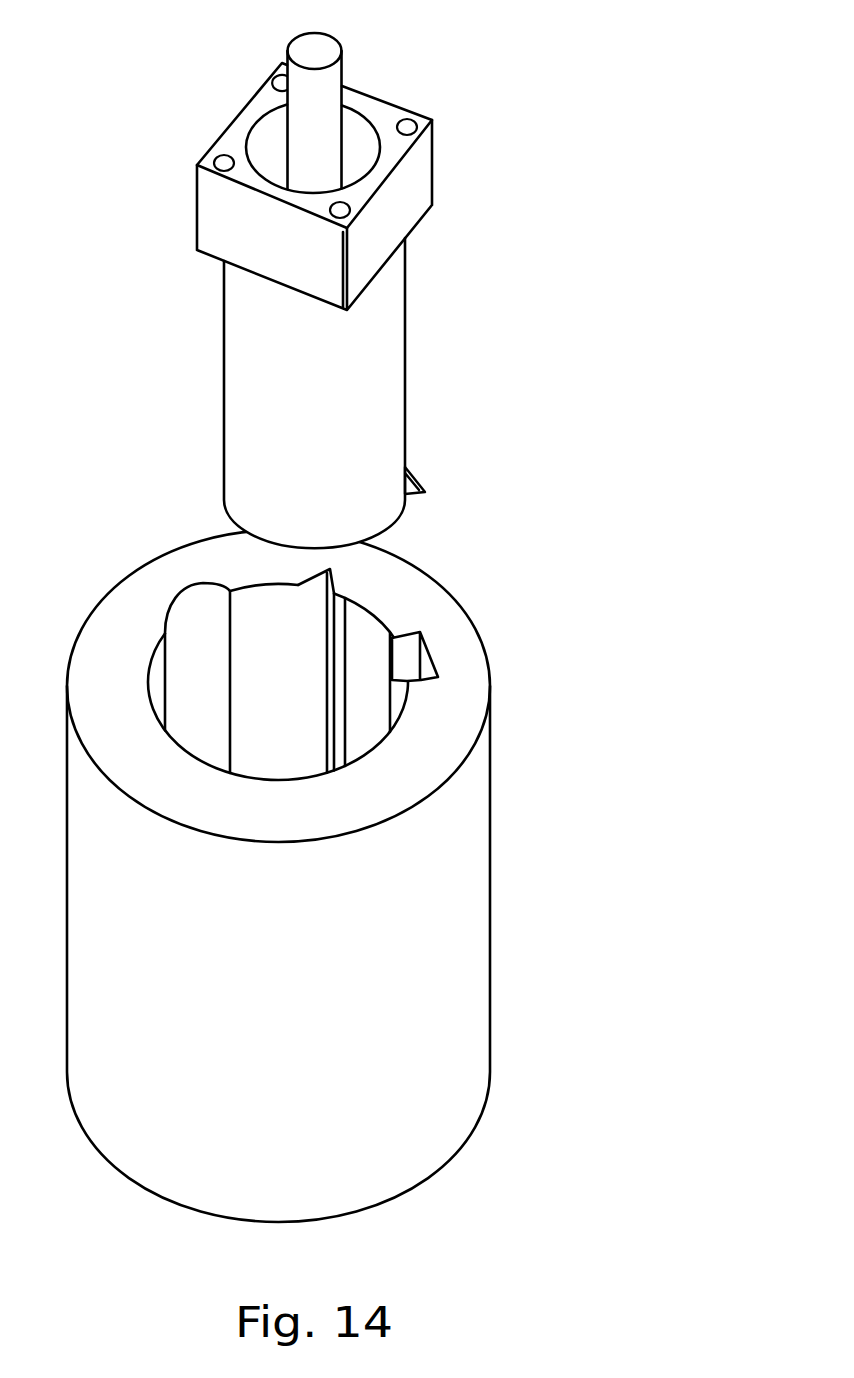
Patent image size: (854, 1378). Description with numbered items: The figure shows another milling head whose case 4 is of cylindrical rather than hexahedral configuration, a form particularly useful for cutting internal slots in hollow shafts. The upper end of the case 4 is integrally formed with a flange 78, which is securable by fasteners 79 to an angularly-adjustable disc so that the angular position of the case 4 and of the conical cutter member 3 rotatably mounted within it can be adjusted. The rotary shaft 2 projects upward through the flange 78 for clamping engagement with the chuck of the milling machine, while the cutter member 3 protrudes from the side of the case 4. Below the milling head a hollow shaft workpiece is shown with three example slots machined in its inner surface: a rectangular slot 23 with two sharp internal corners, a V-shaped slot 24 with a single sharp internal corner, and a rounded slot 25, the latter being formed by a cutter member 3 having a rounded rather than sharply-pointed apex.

The rotary shaft 2 is at (298, 125).
The conical cutter member 3 is at (417, 474).
The case 4 is at (405, 349).
The rectangular slot 23 is at (432, 660).
The V-shaped slot 24 is at (320, 600).
The rounded slot 25 is at (193, 607).
The flange 78 is at (428, 164).
The fasteners 79 is at (406, 118).